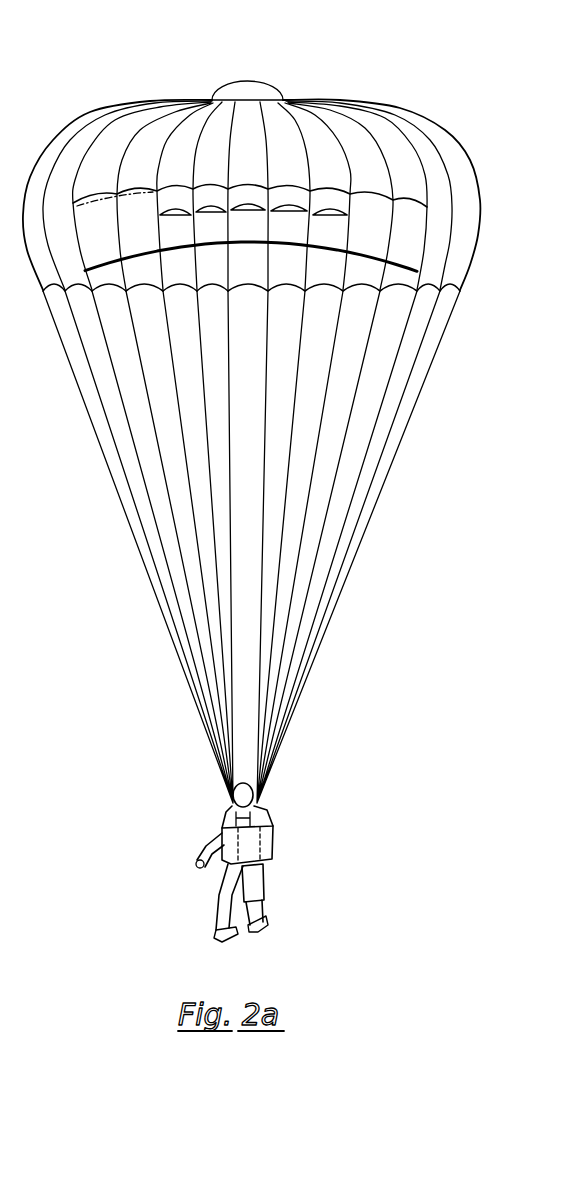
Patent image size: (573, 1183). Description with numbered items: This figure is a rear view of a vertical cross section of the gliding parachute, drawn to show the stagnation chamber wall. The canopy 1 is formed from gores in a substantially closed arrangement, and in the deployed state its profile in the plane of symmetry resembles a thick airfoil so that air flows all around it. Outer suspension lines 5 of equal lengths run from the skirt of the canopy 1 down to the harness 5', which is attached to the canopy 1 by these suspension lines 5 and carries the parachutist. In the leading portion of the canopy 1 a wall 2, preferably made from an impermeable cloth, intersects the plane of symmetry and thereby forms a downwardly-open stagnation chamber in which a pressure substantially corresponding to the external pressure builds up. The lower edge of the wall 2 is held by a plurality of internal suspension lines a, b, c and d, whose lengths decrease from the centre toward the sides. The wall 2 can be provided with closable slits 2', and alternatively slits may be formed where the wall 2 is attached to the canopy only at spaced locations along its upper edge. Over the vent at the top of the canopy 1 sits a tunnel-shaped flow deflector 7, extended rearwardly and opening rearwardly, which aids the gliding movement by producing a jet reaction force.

The canopy 1 is at (423, 173).
The wall 2 is at (407, 243).
The closable slits 2′ is at (337, 210).
The outer suspension lines 5 is at (357, 482).
The harness 5′ is at (235, 812).
The flow deflector 7 is at (253, 83).
The internal suspension line a is at (228, 291).
The internal suspension line b is at (197, 291).
The internal suspension line c is at (160, 288).
The internal suspension line d is at (122, 287).